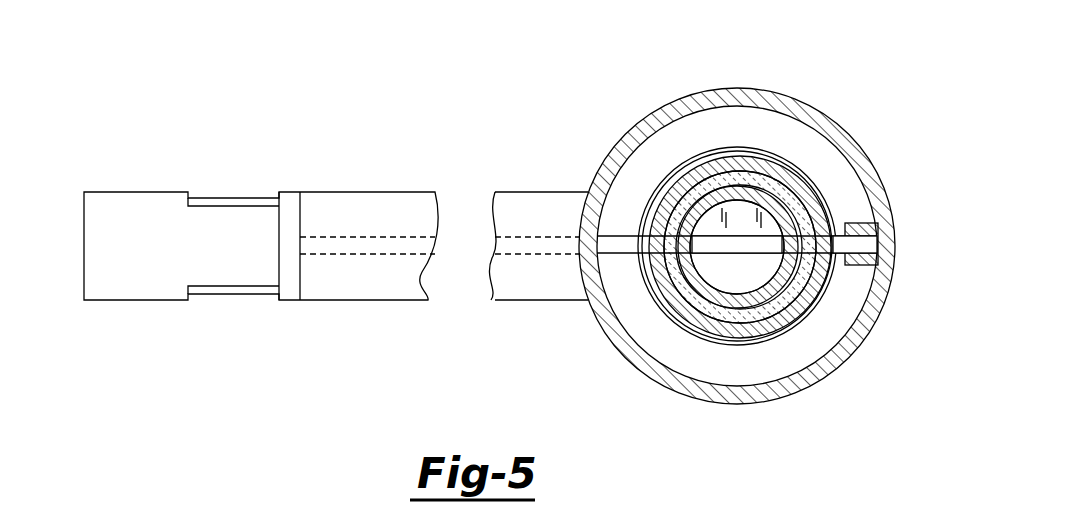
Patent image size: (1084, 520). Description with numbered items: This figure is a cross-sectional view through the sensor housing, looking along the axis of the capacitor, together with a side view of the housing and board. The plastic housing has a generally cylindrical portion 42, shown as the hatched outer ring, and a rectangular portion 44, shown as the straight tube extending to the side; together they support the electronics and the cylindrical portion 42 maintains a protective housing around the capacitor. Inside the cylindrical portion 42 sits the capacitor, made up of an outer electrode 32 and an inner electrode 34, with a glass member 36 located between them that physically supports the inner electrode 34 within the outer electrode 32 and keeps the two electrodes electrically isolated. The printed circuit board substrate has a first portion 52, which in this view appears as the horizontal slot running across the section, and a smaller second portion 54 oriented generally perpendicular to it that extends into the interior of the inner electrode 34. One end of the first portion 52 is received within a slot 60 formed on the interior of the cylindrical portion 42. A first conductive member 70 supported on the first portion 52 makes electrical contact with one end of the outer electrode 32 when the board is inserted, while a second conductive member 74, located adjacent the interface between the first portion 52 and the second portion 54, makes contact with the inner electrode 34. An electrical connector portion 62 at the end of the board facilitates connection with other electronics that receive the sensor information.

The electrical connector portion 62 is at (113, 178).
The rectangular portion 44 is at (364, 192).
The first portion 52 is at (357, 255).
The cylindrical portion 42 is at (830, 118).
The first conductive member 70 is at (652, 193).
The outer electrode 32 is at (766, 327).
The glass member 36 is at (778, 279).
The inner electrode 34 is at (795, 306).
The second conductive member 74 is at (737, 212).
The second portion 54 is at (737, 247).
The slot 60 is at (841, 223).